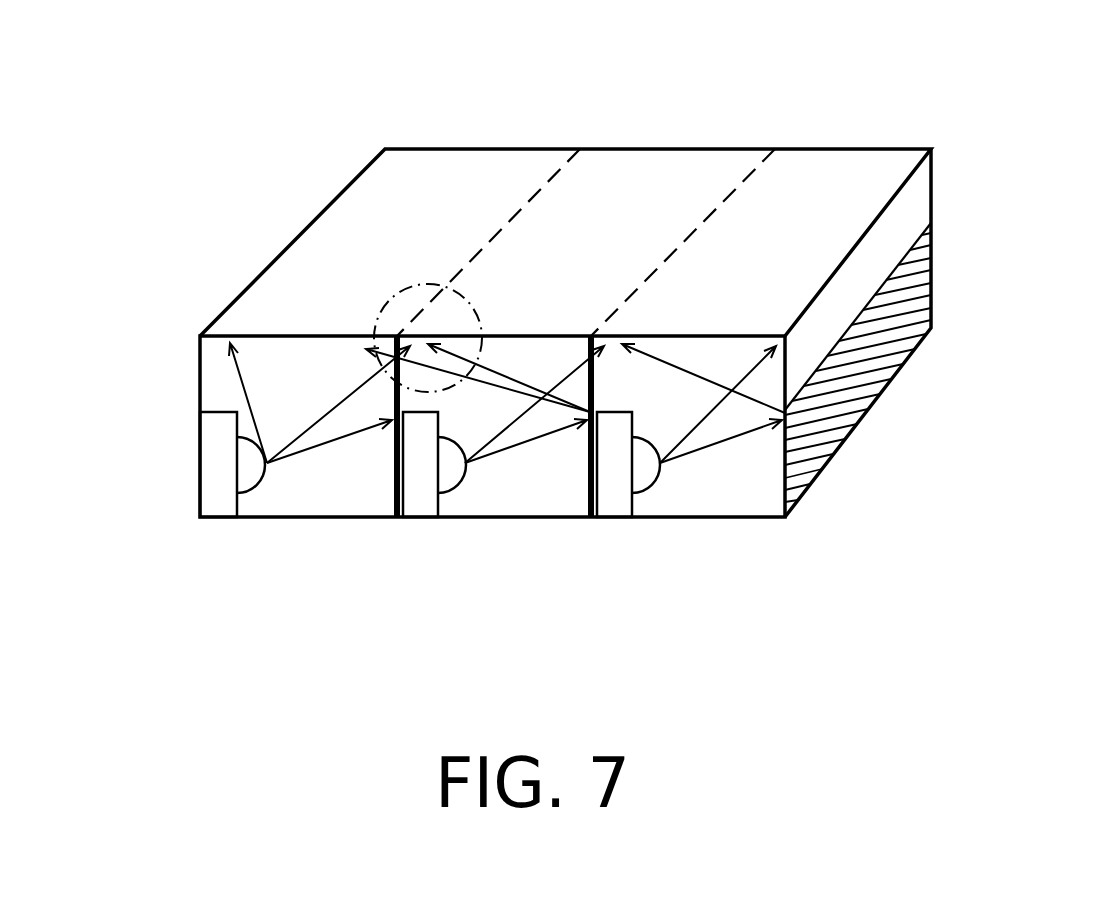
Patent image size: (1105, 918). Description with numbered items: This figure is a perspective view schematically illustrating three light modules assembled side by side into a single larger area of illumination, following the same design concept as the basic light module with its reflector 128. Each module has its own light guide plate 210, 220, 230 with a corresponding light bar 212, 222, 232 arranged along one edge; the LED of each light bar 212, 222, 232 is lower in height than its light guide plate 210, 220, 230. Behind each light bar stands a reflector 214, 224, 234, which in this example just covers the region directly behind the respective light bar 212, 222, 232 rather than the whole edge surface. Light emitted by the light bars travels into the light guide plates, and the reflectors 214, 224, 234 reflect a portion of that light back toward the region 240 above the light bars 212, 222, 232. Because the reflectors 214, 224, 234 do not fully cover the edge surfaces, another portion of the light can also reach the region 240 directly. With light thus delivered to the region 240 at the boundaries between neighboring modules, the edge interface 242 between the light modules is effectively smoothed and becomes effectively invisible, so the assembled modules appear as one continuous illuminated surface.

The reflector 128 is at (908, 206).
The reflector 234 is at (907, 303).
The region above the light bar 240 is at (400, 291).
The edge interface 242 is at (552, 177).
The light guide plate 210 is at (297, 485).
The light bar 212 is at (217, 502).
The reflector 214 is at (393, 492).
The light guide plate 220 is at (493, 485).
The light bar 222 is at (420, 503).
The reflector 224 is at (587, 485).
The light guide plate 230 is at (725, 475).
The light bar 232 is at (612, 502).